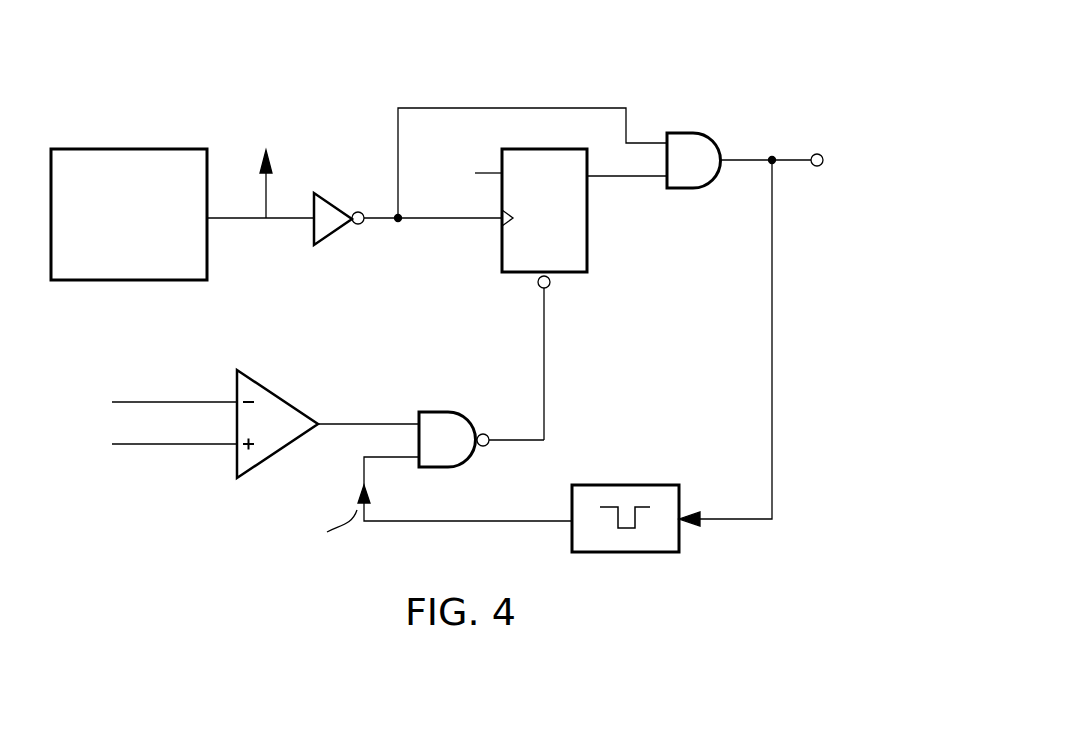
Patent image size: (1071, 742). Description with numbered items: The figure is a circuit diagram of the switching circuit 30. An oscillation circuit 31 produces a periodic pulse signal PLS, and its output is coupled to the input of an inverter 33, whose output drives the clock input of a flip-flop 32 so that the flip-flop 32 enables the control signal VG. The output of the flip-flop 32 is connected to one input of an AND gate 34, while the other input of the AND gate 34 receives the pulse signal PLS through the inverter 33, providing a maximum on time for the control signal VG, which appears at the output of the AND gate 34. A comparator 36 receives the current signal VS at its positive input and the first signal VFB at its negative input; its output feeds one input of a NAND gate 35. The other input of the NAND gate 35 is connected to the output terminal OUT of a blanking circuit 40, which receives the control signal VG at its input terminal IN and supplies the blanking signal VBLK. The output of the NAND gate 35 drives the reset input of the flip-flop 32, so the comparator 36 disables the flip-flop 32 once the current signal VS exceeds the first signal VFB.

The switching circuit 30 is at (900, 59).
The oscillation circuit 31 is at (140, 149).
The flip-flop 32 is at (590, 250).
The inverter 33 is at (332, 238).
The AND gate 34 is at (688, 128).
The NAND gate 35 is at (440, 408).
The comparator 36 is at (285, 395).
The blanking circuit 40 is at (642, 484).